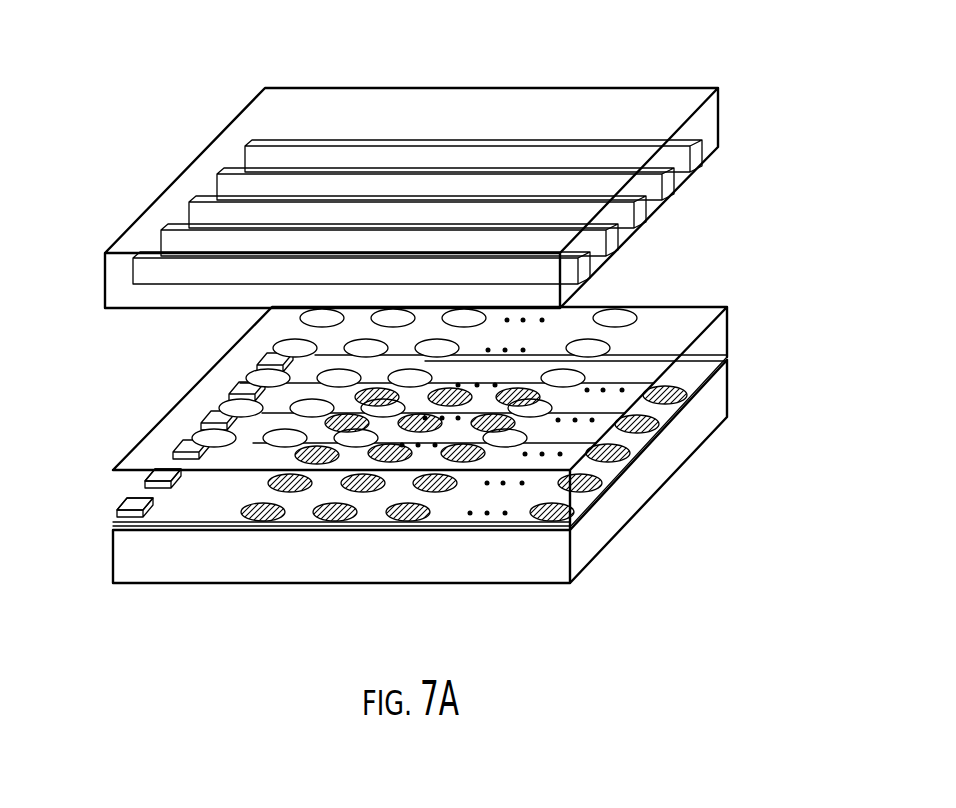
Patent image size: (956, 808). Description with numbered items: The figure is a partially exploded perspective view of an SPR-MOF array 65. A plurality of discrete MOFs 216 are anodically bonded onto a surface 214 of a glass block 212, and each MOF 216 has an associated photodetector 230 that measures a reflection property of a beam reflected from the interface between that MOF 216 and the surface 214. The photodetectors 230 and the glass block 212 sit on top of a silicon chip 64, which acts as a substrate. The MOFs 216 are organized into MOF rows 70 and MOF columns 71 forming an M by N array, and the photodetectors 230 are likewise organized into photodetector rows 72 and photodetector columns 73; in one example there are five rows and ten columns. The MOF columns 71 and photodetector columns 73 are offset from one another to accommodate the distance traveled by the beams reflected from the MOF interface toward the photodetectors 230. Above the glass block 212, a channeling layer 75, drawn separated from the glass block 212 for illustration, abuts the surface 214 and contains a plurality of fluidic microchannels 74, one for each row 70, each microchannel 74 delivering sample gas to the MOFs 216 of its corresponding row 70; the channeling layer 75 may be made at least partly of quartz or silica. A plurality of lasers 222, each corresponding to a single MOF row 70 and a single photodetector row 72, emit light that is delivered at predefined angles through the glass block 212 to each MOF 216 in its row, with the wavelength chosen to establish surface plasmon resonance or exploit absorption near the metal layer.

The SPR-MOF array 65 is at (439, 171).
The channeling layer 75 is at (711, 118).
The fluidic microchannels 74 is at (644, 217).
The MOF columns 71 is at (328, 302).
The silicon chip 64 is at (731, 396).
The surface 214 is at (684, 322).
The glass block 212 is at (108, 470).
The MOF rows 70 is at (278, 307).
The MOFs 216 is at (243, 428).
The photodetectors 230 is at (327, 520).
The photodetector rows 72 is at (645, 461).
The lasers 222 is at (165, 490).
The photodetector columns 73 is at (246, 535).